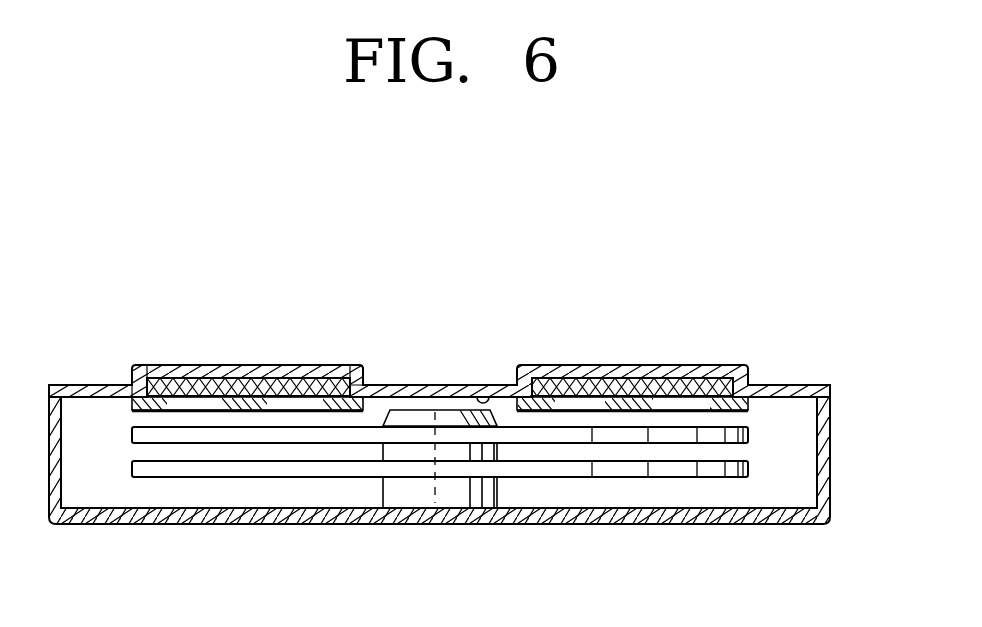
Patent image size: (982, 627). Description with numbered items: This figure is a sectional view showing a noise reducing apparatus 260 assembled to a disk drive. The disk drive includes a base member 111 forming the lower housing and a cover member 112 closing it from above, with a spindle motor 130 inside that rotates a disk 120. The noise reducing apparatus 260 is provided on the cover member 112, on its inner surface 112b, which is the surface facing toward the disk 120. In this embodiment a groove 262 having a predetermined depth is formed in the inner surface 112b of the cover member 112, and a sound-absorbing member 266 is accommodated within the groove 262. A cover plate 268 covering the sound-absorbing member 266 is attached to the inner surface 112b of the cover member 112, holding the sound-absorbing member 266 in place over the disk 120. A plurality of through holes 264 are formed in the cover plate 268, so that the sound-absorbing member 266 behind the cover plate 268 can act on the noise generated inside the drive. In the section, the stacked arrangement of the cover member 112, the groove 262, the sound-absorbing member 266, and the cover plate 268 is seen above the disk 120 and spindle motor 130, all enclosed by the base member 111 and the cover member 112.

The base member 111 is at (802, 525).
The cover member 112 is at (793, 387).
The inner surface of the cover member 112b is at (472, 383).
The disk 120 is at (183, 435).
The spindle motor 130 is at (442, 500).
The noise reducing apparatus 260 is at (417, 292).
The groove 262 is at (153, 365).
The through holes 264 is at (348, 366).
The sound-absorbing member 266 is at (220, 376).
The cover plate 268 is at (278, 376).